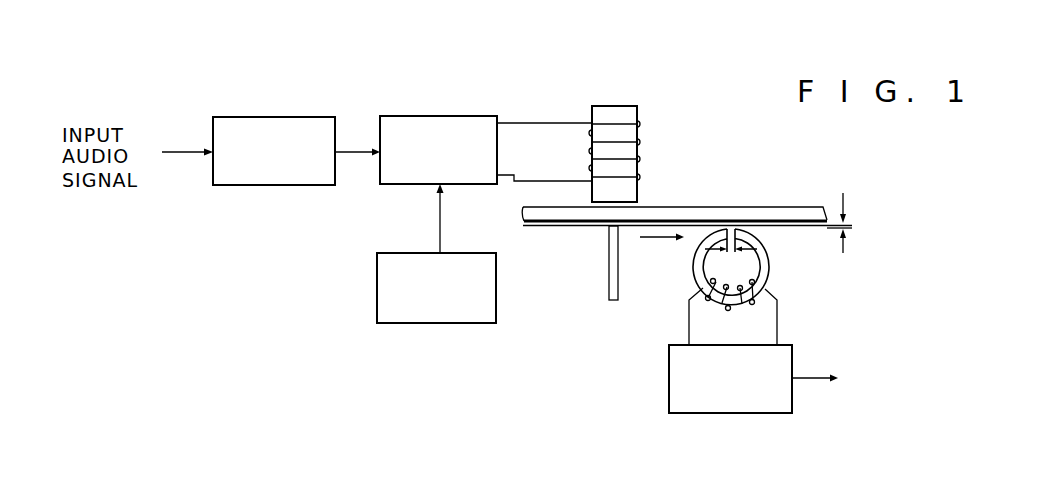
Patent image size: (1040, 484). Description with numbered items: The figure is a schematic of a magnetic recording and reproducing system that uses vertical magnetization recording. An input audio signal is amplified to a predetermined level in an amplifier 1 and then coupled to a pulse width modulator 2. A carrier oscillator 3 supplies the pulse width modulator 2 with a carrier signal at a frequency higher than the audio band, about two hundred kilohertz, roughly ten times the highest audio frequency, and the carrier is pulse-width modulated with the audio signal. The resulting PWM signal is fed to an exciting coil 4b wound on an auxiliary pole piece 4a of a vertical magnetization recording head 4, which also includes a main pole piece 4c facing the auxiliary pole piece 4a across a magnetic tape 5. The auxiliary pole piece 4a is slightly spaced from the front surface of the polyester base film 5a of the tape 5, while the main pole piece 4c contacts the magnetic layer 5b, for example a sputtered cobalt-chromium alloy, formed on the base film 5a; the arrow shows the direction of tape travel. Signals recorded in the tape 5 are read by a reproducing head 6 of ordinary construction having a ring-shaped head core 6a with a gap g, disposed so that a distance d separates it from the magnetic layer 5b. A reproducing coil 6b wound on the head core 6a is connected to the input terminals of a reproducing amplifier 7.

The amplifier 1 is at (301, 123).
The pulse width modulator 2 is at (436, 123).
The carrier oscillator 3 is at (490, 301).
The vertical magnetization recording head 4 is at (594, 186).
The auxiliary pole piece 4a is at (617, 111).
The exciting coil 4b is at (641, 148).
The main pole piece 4c is at (619, 272).
The magnetic tape 5 is at (687, 215).
The base film 5a is at (681, 207).
The magnetic layer 5b is at (571, 227).
The reproducing head 6 is at (753, 287).
The head core 6a is at (765, 268).
The reproducing coil 6b is at (730, 304).
The reproducing amplifier 7 is at (785, 365).
The gap g is at (733, 248).
The distance d is at (852, 226).